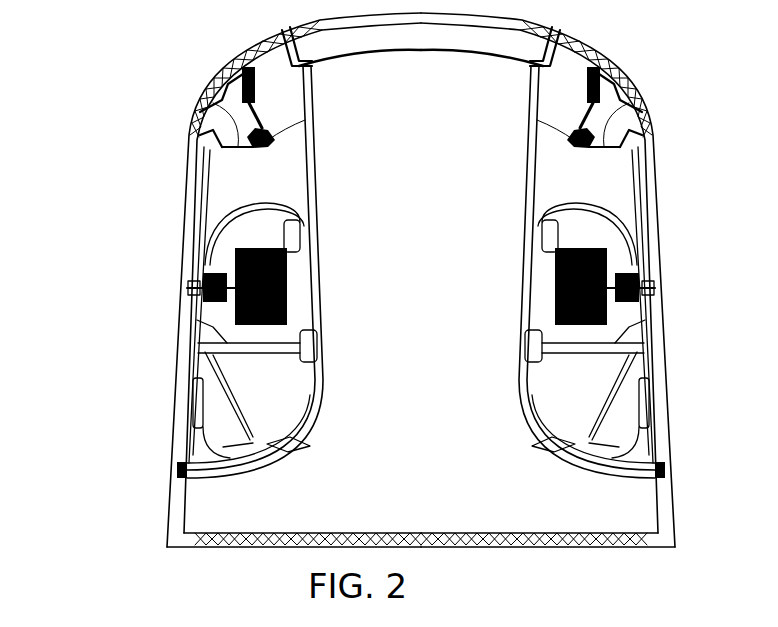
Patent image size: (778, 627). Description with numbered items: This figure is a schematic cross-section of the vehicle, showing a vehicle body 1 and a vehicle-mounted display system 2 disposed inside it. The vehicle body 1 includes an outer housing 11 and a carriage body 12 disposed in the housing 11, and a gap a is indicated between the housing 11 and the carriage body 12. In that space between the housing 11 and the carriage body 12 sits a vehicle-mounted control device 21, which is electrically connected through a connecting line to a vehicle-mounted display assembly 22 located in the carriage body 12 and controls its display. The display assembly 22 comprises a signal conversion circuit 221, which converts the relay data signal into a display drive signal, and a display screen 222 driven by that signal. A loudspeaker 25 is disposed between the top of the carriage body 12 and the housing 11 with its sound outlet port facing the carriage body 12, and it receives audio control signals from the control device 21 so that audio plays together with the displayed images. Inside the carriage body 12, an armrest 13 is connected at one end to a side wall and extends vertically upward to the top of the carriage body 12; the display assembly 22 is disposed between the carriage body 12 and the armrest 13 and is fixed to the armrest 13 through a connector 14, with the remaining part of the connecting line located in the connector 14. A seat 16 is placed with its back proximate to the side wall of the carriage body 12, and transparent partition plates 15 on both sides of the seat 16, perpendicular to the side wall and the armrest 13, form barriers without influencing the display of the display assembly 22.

The vehicle body 1 is at (238, 280).
The housing 11 is at (190, 153).
The carriage body 12 is at (217, 110).
The armrest 13 is at (313, 163).
The connector 14 is at (190, 293).
The partition plate 15 is at (213, 327).
The seat 16 is at (215, 422).
The vehicle-mounted display system 2 is at (322, 176).
The vehicle-mounted control device 21 is at (243, 83).
The vehicle-mounted display assembly 22 is at (303, 274).
The signal conversion circuit 221 is at (217, 273).
The display screen 222 is at (287, 262).
The loudspeaker 25 is at (270, 137).
The gap a is at (187, 197).